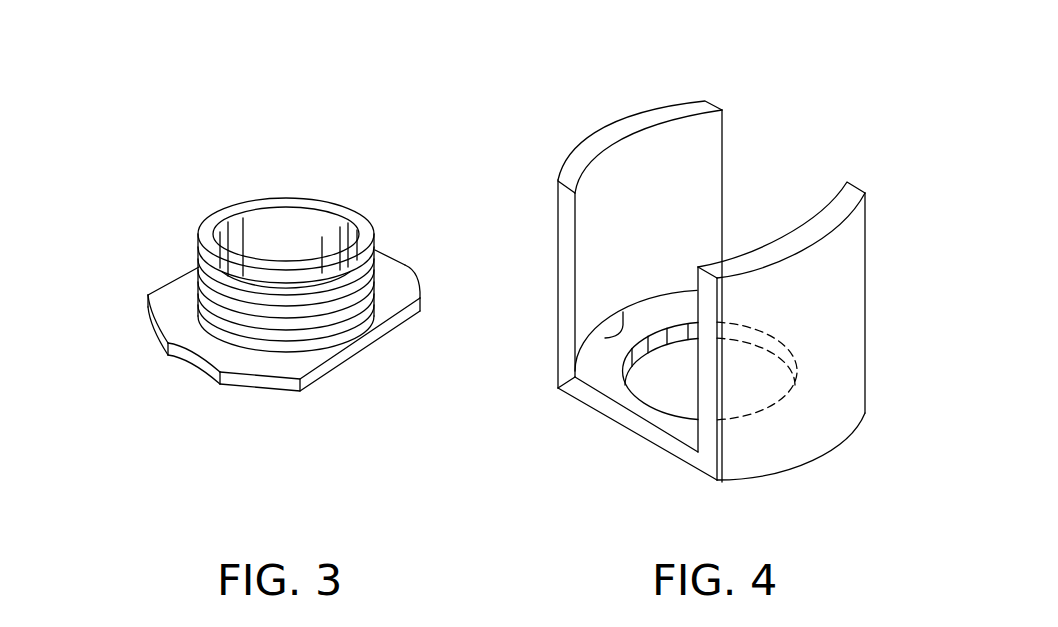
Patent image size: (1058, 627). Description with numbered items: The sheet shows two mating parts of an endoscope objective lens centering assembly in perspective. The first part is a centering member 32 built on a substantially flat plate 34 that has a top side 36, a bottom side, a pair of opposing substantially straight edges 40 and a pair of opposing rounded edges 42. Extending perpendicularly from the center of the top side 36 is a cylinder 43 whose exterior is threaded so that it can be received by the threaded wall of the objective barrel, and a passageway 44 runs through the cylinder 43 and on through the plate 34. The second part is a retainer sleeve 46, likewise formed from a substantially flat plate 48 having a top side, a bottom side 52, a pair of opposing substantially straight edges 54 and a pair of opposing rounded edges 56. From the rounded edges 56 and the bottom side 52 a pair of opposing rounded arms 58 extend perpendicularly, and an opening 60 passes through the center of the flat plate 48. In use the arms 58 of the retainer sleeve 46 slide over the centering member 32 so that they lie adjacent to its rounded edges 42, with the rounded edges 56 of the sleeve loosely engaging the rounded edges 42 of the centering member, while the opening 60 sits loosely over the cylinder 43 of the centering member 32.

In FIG. 3, the centering member 32 is at (307, 150).
In FIG. 3, the substantially flat plate 34 is at (148, 295).
In FIG. 3, the top side 36 is at (190, 323).
In FIG. 3, the pair of opposing substantially straight edges 40 is at (180, 277).
In FIG. 3, the pair of opposing rounded edges 42 is at (405, 266).
In FIG. 3, the cylinder 43 is at (347, 213).
In FIG. 3, the passageway 44 is at (285, 278).
In FIG. 4, the retainer sleeve 46 is at (800, 117).
In FIG. 4, the substantially flat plate 48 is at (670, 455).
In FIG. 4, the bottom side 52 is at (598, 368).
In FIG. 4, the pair of opposing substantially straight edges 54 is at (617, 408).
In FIG. 4, the pair of opposing rounded edges 56 is at (605, 338).
In FIG. 4, the pair of opposing rounded arms 58 is at (655, 183).
In FIG. 4, the opening 60 is at (688, 393).